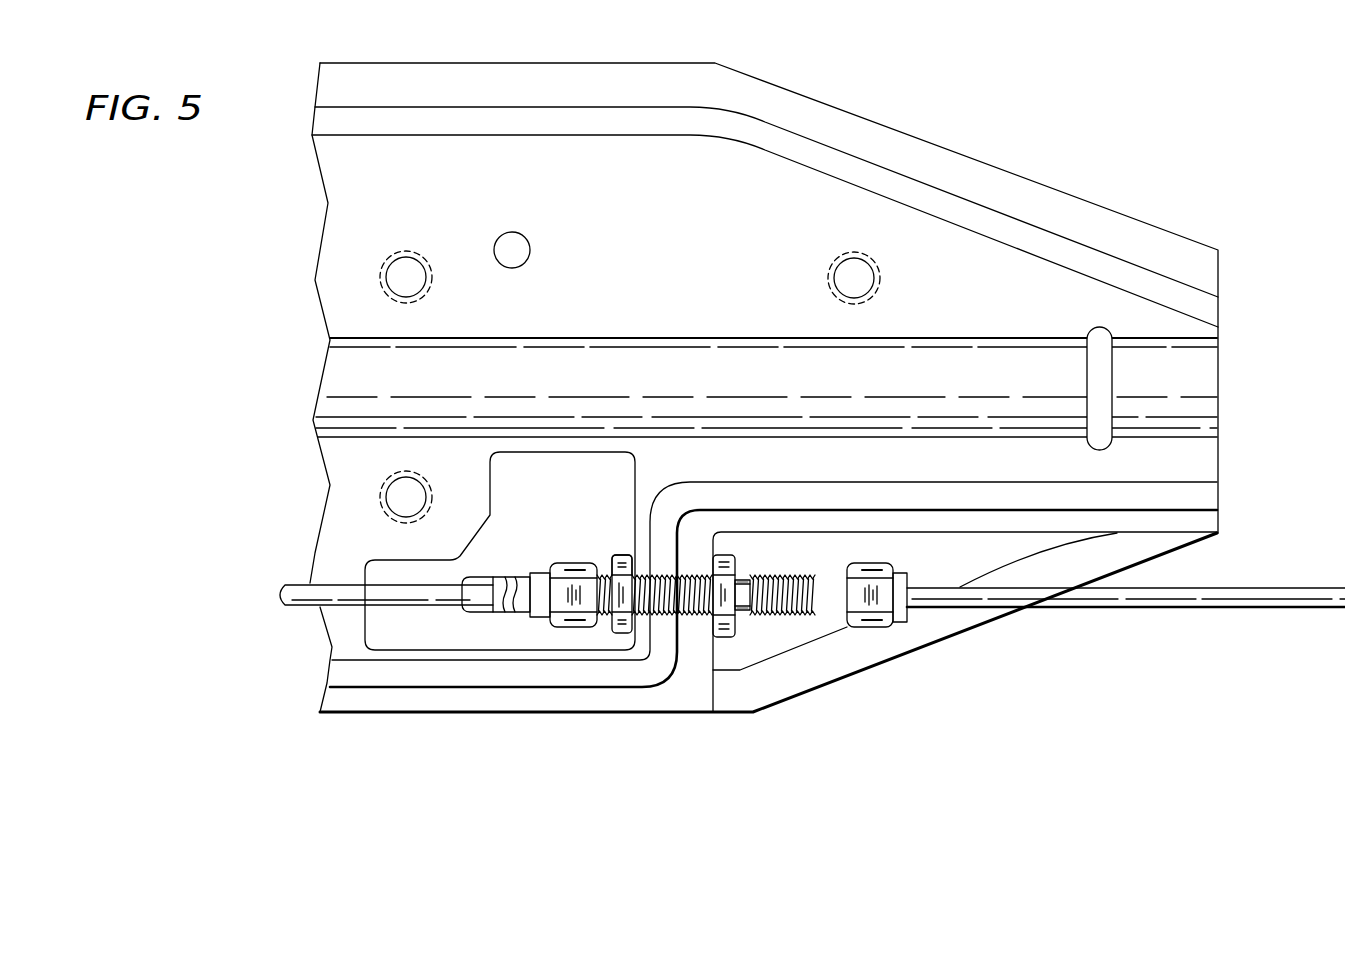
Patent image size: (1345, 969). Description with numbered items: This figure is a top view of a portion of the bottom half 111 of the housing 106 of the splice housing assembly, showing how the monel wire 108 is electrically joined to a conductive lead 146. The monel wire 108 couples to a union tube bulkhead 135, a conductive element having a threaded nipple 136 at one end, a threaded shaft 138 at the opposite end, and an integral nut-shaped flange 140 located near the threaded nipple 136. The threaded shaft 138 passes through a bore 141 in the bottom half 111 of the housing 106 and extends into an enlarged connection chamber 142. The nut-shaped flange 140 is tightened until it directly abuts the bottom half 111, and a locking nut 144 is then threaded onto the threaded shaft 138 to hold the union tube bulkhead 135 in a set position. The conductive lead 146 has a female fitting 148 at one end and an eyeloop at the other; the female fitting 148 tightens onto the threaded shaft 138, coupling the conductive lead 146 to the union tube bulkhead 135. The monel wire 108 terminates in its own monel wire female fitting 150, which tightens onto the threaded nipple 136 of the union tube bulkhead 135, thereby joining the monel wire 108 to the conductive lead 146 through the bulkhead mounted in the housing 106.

The housing 106 is at (930, 150).
The monel wire 108 is at (1157, 607).
The bottom half of the housing 111 is at (465, 702).
The union tube bulkhead 135 is at (739, 574).
The threaded nipple 136 is at (787, 616).
The threaded shaft 138 is at (609, 572).
The nut-shaped flange 140 is at (719, 632).
The bore 141 is at (690, 616).
The enlarged connection chamber 142 is at (436, 630).
The locking nut 144 is at (622, 628).
The conductive lead 146 is at (407, 607).
The female fitting 148 is at (567, 622).
The monel wire female fitting 150 is at (870, 628).